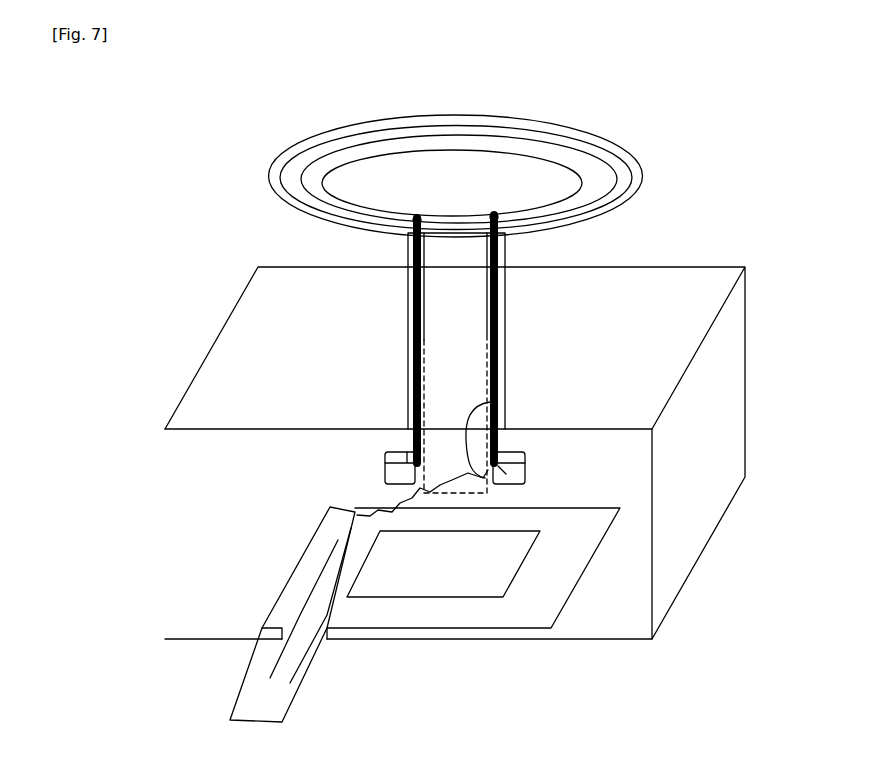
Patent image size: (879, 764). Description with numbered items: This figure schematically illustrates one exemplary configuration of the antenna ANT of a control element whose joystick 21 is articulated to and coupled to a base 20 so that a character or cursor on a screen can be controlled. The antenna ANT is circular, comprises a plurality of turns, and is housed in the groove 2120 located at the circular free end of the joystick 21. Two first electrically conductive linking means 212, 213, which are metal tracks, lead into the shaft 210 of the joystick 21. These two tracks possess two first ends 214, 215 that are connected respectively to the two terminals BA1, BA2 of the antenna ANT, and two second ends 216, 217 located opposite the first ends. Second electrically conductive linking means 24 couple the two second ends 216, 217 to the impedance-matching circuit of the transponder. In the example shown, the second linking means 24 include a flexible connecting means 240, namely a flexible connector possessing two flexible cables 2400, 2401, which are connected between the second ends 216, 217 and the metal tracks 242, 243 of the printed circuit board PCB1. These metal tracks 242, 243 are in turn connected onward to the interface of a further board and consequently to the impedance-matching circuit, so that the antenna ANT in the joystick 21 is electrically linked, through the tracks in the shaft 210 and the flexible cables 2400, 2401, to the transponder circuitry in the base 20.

The base 20 is at (438, 453).
The joystick 21 is at (454, 165).
The antenna ANT is at (553, 178).
The groove 2120 is at (270, 174).
The shaft 210 is at (447, 283).
The first electrically conductive linking means 212 is at (369, 268).
The first electrically conductive linking means 213 is at (533, 268).
The antenna terminal BA1 is at (414, 218).
The antenna terminal BA2 is at (493, 210).
The first end 214 is at (413, 242).
The first end 215 is at (498, 236).
The second end 216 is at (398, 452).
The second end 217 is at (525, 452).
The flexible connecting means 240 is at (392, 555).
The flexible cable 2400 is at (357, 515).
The flexible cable 2401 is at (497, 400).
The metal track 242 is at (302, 612).
The metal track 243 is at (330, 615).
The second electrically conductive linking means 24 is at (350, 573).
The printed circuit board PCB1 is at (316, 558).